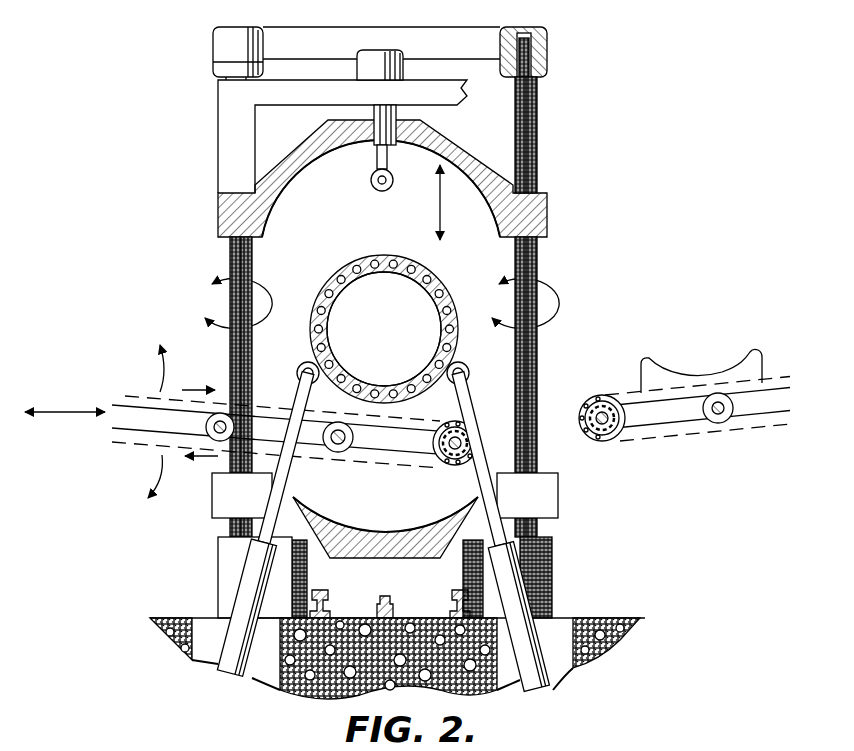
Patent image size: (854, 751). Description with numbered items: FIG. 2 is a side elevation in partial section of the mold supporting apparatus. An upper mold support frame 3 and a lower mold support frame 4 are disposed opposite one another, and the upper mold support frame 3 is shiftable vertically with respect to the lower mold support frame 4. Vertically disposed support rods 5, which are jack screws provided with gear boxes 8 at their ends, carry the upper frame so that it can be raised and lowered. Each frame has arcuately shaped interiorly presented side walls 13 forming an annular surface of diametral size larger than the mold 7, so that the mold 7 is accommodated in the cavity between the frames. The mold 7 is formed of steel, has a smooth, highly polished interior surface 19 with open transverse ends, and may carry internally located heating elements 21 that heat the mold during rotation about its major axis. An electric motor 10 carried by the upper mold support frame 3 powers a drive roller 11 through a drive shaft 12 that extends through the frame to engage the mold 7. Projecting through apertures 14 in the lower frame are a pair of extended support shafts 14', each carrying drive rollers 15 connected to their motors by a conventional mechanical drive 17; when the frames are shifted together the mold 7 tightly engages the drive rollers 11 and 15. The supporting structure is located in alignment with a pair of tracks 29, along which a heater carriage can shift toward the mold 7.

The electric motor 10 is at (403, 62).
The support rods 5 is at (537, 120).
The drive shaft 12 is at (374, 146).
The drive roller 11 is at (373, 187).
The upper mold support frame 3 is at (431, 142).
The arcuately shaped side walls 13 is at (287, 193).
The mold 7 is at (433, 278).
The heating elements 21 is at (327, 279).
The interior surface 19 is at (384, 329).
The drive rollers 15 is at (300, 364).
The apertures 14 is at (383, 532).
The extended support shafts 14' is at (386, 495).
The lower mold support frame 4 is at (340, 531).
The mechanical drive 17 is at (248, 593).
The tracks 29 is at (452, 588).
The gear boxes 8 is at (545, 552).